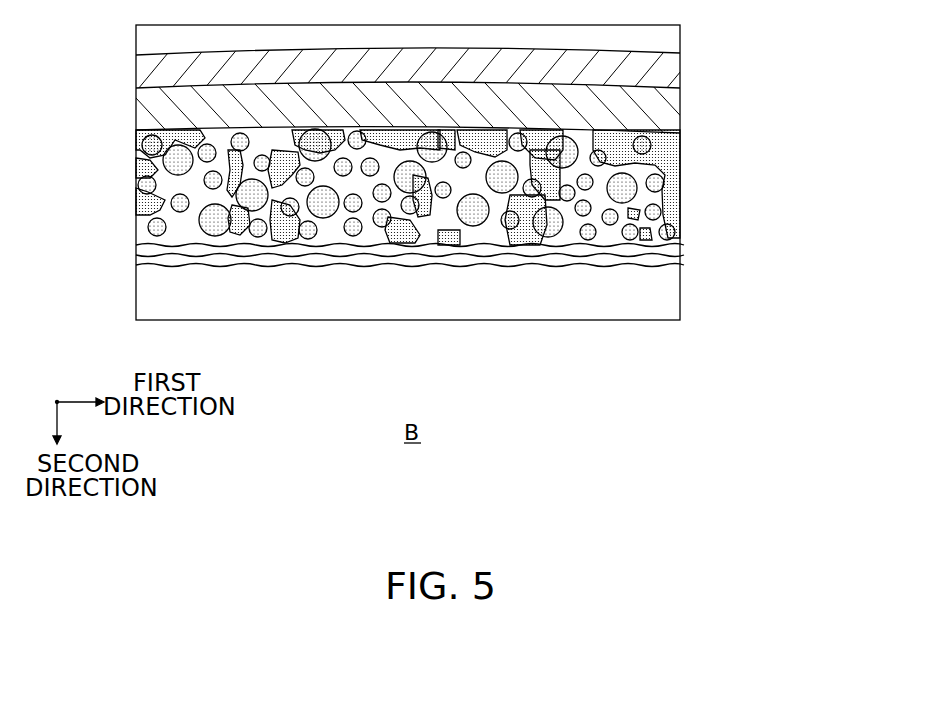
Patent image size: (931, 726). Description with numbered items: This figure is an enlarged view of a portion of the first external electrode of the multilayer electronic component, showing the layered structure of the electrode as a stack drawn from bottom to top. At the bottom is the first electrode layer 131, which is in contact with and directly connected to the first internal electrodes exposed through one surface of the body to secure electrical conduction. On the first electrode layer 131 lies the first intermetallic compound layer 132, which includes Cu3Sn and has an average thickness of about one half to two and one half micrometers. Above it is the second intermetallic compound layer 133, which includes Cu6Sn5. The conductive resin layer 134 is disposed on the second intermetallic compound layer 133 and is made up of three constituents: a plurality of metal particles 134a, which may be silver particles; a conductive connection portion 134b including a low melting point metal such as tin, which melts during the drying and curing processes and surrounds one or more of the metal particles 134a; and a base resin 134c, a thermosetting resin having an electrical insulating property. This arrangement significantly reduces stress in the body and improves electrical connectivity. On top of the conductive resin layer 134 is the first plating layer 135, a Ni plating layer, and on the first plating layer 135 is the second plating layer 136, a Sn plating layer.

The first electrode layer 131 is at (670, 298).
The first intermetallic compound layer 132 is at (683, 257).
The second intermetallic compound layer 133 is at (680, 245).
The conductive resin layer 134 is at (489, 181).
The metal particles 134a is at (680, 140).
The conductive connection portion 134b is at (680, 172).
The base resin 134c is at (680, 200).
The first plating layer 135 is at (670, 108).
The second plating layer 136 is at (670, 68).